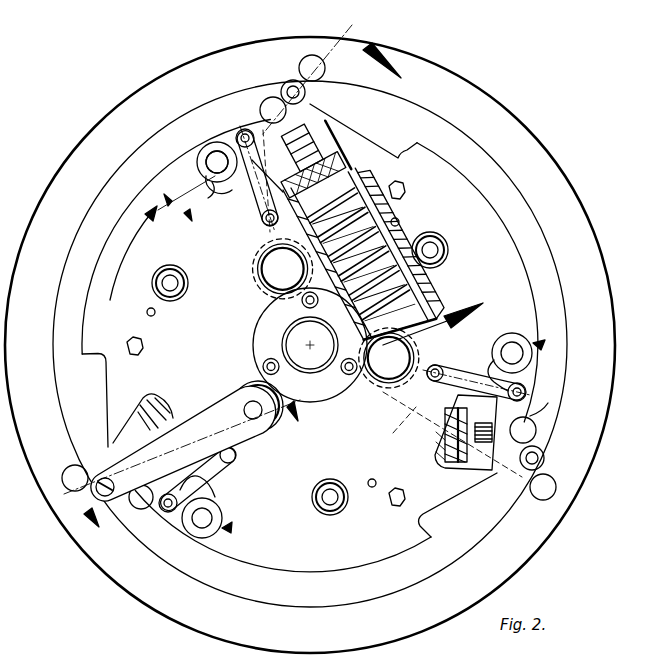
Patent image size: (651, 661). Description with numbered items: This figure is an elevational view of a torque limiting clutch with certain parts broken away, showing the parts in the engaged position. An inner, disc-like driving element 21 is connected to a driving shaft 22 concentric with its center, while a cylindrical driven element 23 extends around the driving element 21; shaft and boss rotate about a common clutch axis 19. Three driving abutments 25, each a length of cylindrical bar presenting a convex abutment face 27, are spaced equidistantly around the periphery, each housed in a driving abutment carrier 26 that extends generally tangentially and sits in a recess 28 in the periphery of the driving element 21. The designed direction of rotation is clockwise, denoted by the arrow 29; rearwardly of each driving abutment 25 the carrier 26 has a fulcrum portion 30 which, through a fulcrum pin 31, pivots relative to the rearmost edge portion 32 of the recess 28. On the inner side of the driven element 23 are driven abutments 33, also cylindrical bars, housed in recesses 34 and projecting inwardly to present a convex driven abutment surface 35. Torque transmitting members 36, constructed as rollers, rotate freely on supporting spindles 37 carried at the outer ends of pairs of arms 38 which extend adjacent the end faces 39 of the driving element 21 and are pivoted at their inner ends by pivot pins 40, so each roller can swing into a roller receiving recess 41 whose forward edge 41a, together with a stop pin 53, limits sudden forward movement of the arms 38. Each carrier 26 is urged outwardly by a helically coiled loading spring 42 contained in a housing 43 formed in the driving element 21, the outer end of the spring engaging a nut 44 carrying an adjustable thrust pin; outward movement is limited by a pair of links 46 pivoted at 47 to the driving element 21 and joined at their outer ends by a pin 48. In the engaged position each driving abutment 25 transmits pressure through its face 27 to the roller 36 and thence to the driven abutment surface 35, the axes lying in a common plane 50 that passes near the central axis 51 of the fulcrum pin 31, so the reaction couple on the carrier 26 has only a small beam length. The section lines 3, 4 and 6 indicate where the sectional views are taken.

The section line 3- 3 is at (372, 185).
The section line 4- 4 is at (467, 434).
The section line 6- 6 is at (185, 475).
The clutch axis 19 is at (306, 358).
The driving element 21 is at (517, 290).
The driving shaft 22 is at (292, 330).
The driven element 23 is at (310, 345).
The driving abutment 25 is at (268, 98).
The driving abutment carrier 26 is at (222, 140).
The abutment face 27 is at (266, 96).
The recess 28 is at (350, 165).
The arrow 29 is at (128, 253).
The fulcrum portion 30 is at (232, 528).
The fulcrum pin 31 is at (196, 163).
The edge portion 32 is at (236, 200).
The driven abutment 33 is at (326, 74).
The recess 34 is at (318, 50).
The driven abutment surface 35 is at (542, 457).
The torque transmitting member 36 is at (306, 96).
The supporting spindle 37 is at (112, 480).
The arm 38 is at (207, 404).
The end face 39 is at (256, 573).
The pivot pin 40 is at (248, 410).
The roller receiving recess 41 is at (95, 380).
The forward edge 41a is at (92, 354).
The loading spring 42 is at (392, 252).
The housing 43 is at (427, 293).
The nut 44 is at (341, 145).
The link 46 is at (262, 228).
The pivot 47 is at (262, 226).
The pin 48 is at (243, 128).
The common plane 50 is at (195, 210).
The central axis 51 is at (210, 165).
The stop pin 53 is at (405, 186).